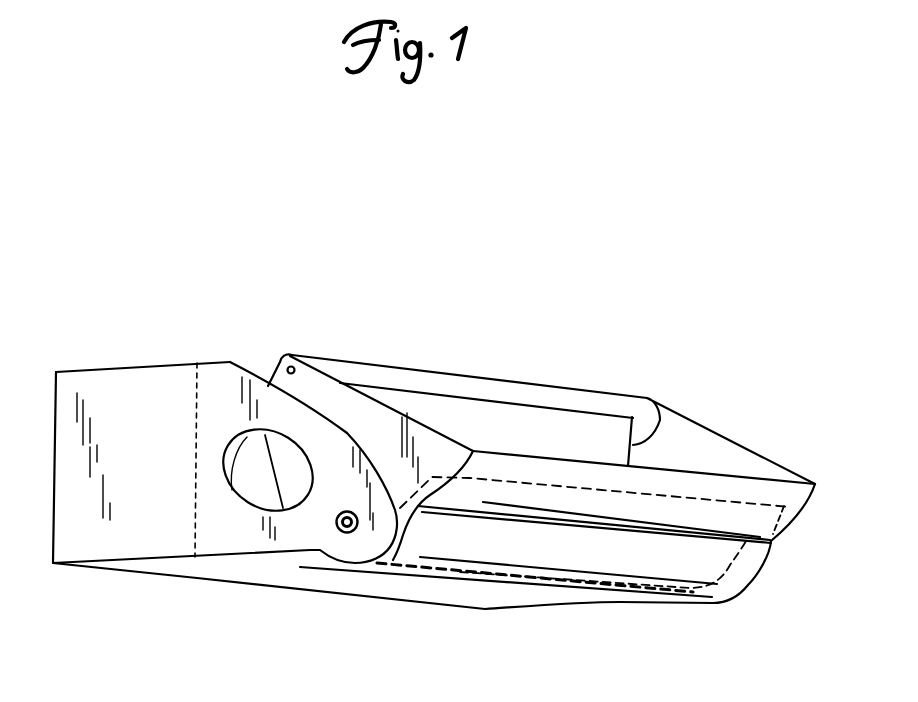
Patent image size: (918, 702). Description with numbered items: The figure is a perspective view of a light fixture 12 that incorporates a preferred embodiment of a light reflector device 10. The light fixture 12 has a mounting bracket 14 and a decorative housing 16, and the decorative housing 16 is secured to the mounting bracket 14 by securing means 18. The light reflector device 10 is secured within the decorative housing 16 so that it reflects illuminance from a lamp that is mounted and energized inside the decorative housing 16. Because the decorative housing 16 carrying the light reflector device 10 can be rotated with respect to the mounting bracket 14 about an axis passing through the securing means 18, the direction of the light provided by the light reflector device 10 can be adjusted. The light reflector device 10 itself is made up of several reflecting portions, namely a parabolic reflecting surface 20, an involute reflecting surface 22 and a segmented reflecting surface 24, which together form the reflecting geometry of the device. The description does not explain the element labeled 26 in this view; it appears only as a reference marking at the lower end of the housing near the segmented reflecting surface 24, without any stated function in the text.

The light reflector device 10 is at (530, 429).
The light fixture 12 is at (248, 300).
The mounting bracket 14 is at (96, 364).
The decorative housing 16 is at (405, 362).
The securing means 18 is at (337, 531).
The parabolic reflecting surface 20 is at (660, 437).
The involute reflecting surface 22 is at (650, 597).
The segmented reflecting surface 24 is at (788, 534).
The hidden bottom curve 26 is at (762, 566).